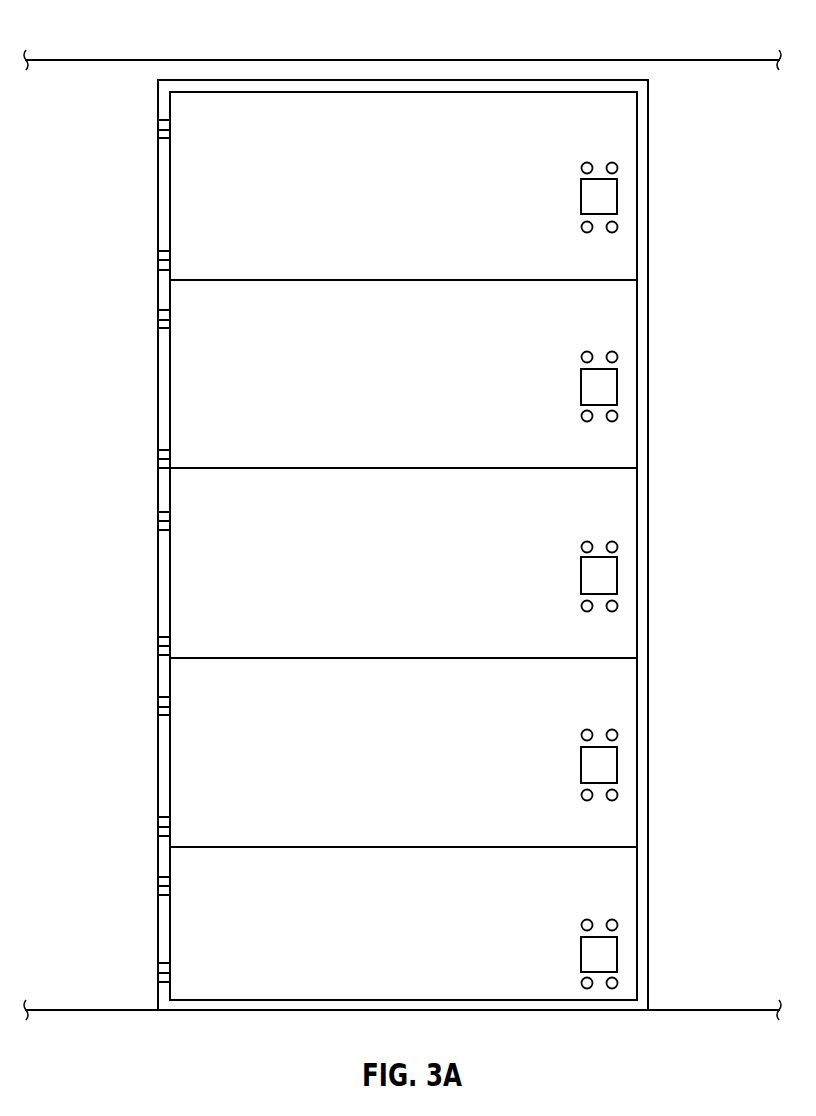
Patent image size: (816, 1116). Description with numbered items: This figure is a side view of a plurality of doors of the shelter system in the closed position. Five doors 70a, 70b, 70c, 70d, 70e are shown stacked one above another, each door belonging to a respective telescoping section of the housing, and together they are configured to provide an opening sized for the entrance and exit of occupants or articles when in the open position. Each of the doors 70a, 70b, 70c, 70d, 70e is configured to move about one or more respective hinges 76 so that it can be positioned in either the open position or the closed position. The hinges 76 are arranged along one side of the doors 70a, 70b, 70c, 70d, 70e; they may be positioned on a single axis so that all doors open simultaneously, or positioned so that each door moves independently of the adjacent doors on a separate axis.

The door 70a is at (604, 890).
The door 70b is at (604, 703).
The door 70c is at (604, 520).
The door 70d is at (604, 335).
The door 70e is at (410, 120).
The hinge 76 is at (160, 130).